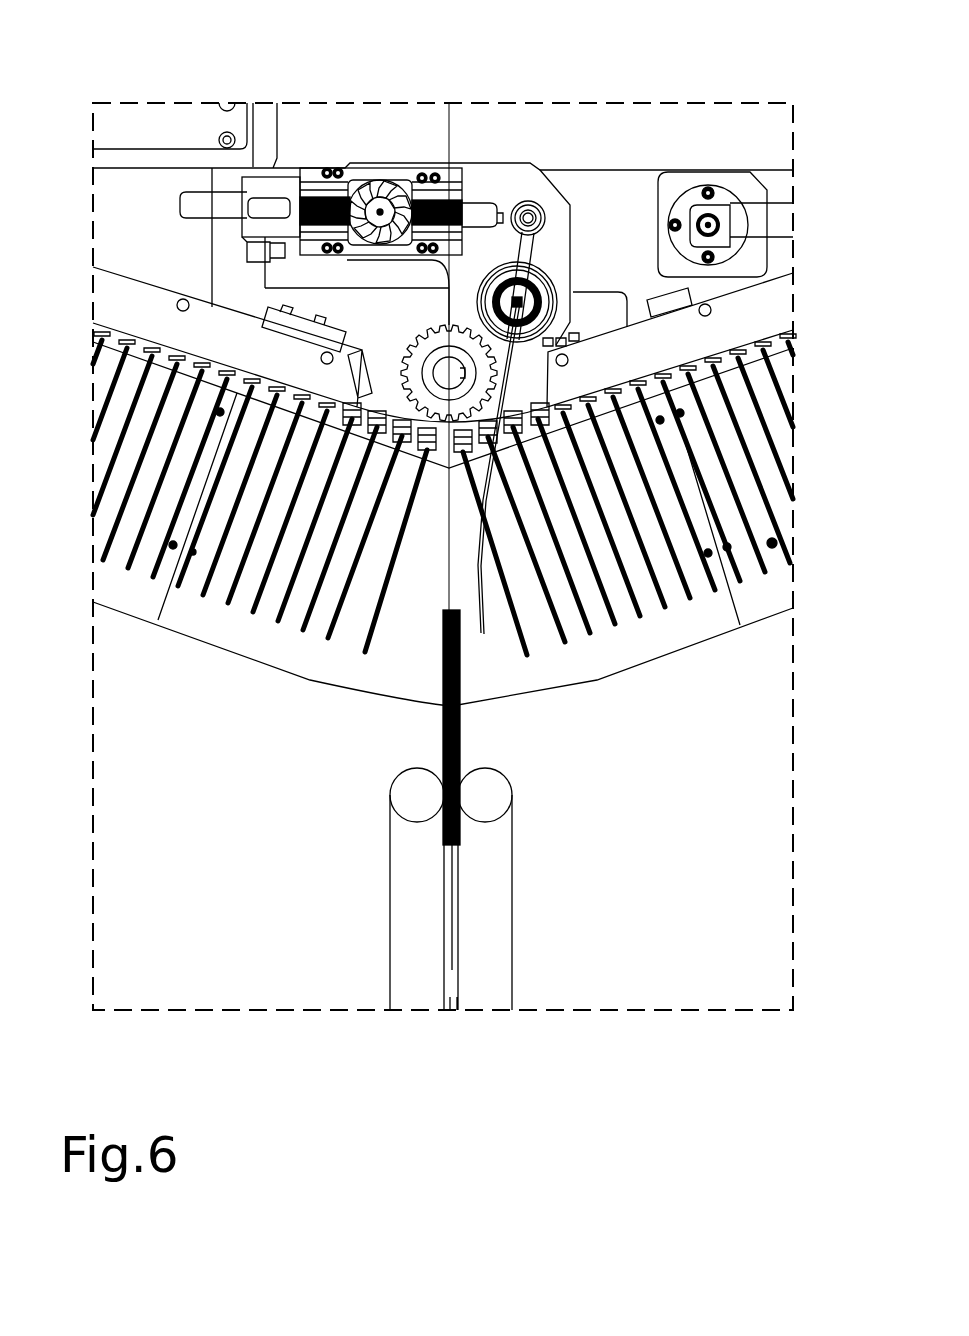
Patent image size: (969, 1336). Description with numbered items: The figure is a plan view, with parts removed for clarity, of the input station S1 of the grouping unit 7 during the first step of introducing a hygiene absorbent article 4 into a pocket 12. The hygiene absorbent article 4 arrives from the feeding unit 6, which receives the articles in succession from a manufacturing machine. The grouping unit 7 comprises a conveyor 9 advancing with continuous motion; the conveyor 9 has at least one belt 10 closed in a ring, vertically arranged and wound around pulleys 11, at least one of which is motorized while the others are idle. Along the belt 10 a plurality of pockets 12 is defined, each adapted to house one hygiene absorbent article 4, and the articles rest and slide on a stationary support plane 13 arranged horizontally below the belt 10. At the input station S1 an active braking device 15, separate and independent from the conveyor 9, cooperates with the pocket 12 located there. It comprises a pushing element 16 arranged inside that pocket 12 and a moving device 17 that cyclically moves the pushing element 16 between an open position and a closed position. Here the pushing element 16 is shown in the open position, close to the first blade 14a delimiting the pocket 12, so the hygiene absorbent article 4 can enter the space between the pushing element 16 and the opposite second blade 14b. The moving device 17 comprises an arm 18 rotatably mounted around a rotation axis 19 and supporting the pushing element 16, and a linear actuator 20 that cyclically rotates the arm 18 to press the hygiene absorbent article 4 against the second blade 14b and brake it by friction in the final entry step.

The hygiene absorbent article 4 is at (443, 740).
The feeding unit 6 is at (355, 947).
The grouping unit 7 is at (705, 1083).
The conveyor 9 is at (765, 706).
The belt 10 is at (370, 403).
The pulley 11 is at (445, 167).
The pocket 12 is at (776, 543).
The stationary support plane 13 is at (675, 637).
The first blade 14a is at (523, 620).
The second blade 14b is at (370, 637).
The active braking device 15 is at (610, 247).
The pushing element 16 is at (483, 627).
The moving device 17 is at (548, 140).
The arm 18 is at (493, 487).
The rotation axis 19 is at (525, 296).
The actuator 20 is at (362, 167).
The input station S1 is at (342, 727).